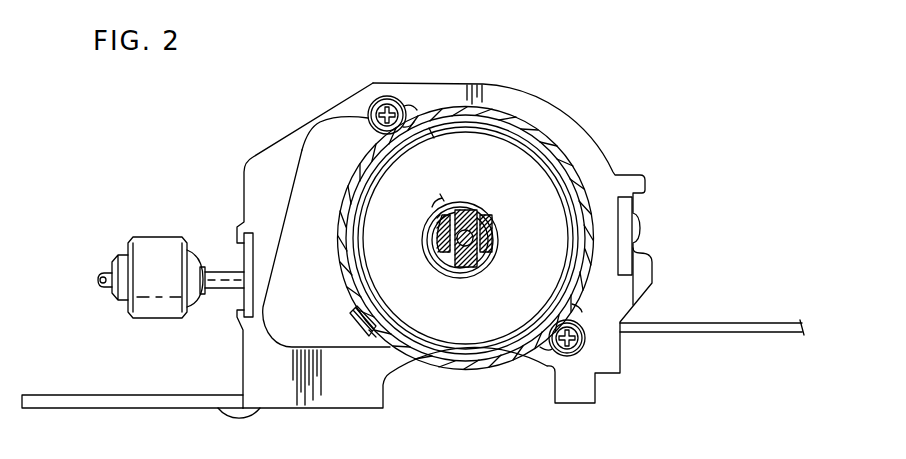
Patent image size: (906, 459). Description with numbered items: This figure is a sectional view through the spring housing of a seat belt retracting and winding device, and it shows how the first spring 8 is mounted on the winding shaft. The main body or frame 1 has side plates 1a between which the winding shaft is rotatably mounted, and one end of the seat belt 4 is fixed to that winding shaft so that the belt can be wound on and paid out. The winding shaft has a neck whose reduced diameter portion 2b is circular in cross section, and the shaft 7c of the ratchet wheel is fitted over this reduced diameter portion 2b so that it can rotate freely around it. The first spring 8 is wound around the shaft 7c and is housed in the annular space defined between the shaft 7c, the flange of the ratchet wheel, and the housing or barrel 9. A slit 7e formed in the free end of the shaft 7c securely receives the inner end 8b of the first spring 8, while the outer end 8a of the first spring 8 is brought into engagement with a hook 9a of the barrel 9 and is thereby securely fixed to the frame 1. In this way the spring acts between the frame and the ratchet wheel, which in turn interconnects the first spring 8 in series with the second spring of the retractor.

The frame 1 is at (178, 404).
The side plate 1a is at (608, 178).
The reduced diameter portion 2b is at (466, 266).
The seat belt 4 is at (700, 310).
The shaft 7c is at (466, 209).
The slit 7e is at (474, 244).
The first spring 8 is at (547, 160).
The outer end 8a is at (372, 334).
The inner end 8b is at (480, 226).
The barrel 9 is at (330, 127).
The hook 9a is at (352, 318).